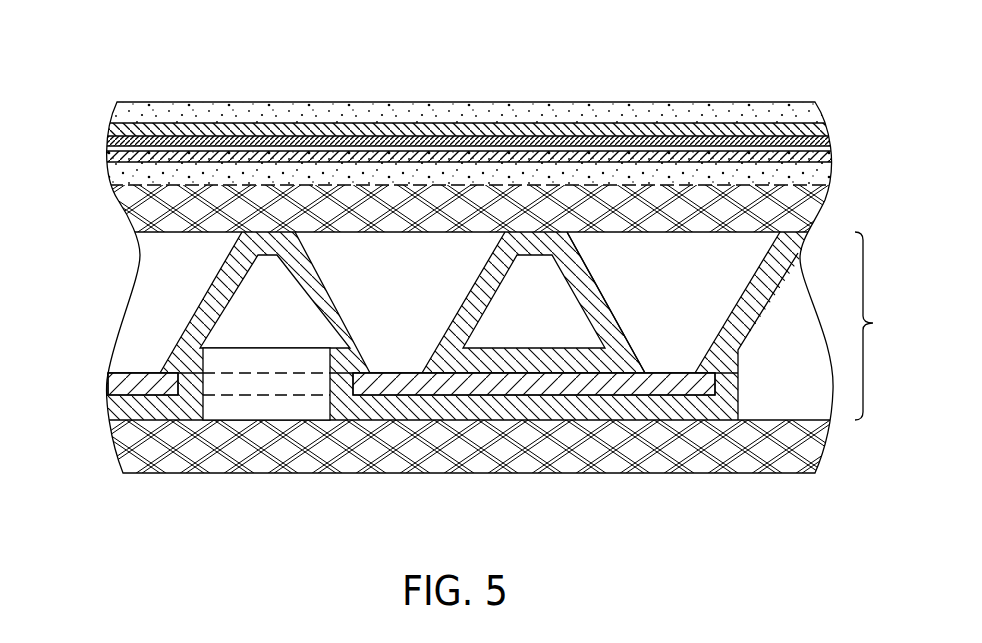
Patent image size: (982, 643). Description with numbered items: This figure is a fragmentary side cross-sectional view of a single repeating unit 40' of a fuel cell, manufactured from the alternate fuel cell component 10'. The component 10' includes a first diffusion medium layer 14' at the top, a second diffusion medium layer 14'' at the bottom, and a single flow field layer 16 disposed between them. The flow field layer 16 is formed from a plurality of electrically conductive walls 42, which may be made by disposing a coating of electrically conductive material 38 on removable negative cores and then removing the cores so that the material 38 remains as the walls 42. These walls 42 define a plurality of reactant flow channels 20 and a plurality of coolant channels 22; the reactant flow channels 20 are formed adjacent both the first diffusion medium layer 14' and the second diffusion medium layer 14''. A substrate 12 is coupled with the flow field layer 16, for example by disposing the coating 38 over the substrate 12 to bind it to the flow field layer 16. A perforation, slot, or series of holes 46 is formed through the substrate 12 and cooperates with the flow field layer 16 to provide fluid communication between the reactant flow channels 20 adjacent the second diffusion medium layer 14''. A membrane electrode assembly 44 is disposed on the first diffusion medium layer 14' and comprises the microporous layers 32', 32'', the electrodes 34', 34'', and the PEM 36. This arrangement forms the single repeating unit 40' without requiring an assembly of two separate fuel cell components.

The single repeating unit 40' is at (788, 48).
The microporous layer 32'' is at (499, 98).
The electrode 34'' is at (501, 116).
The PEM 36 is at (836, 140).
The electrode 34' is at (498, 158).
The microporous layer 32' is at (496, 180).
The first diffusion medium layer 14' is at (481, 208).
The membrane electrode assembly 44 is at (100, 102).
The alternate fuel cell component 10' is at (54, 185).
The electrically conductive material 38 is at (202, 282).
The electrically conductive walls 42 is at (598, 285).
The coolant channels 22 is at (544, 310).
The reactant flow channels 20 is at (370, 306).
The holes 46 is at (247, 363).
The substrate 12 is at (716, 383).
The second diffusion medium layer 14'' is at (497, 446).
The flow field layer 16 is at (874, 326).